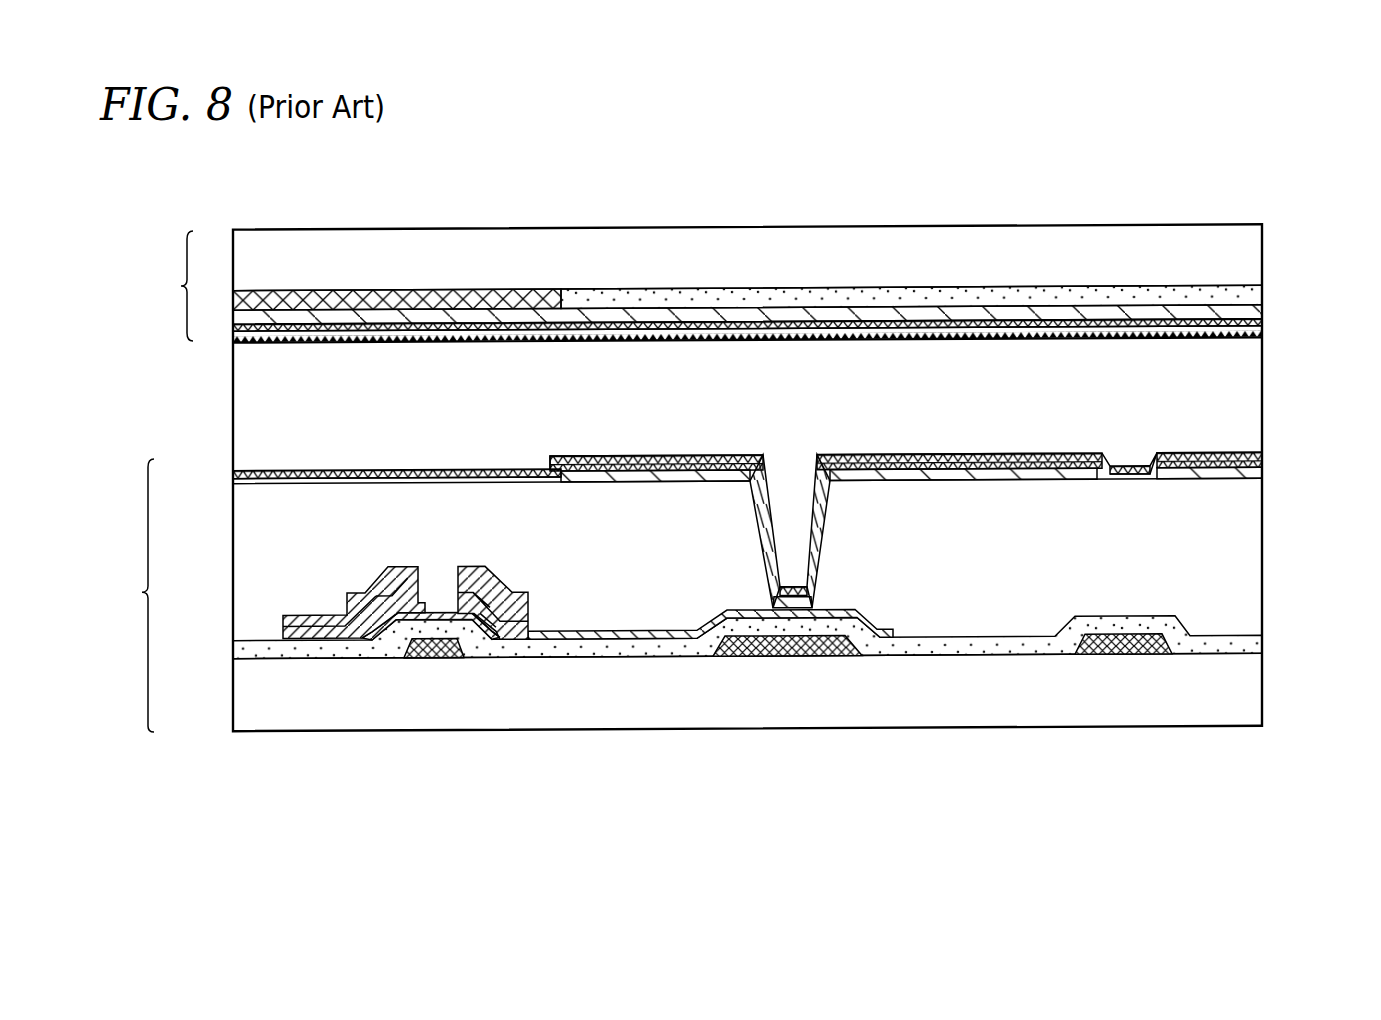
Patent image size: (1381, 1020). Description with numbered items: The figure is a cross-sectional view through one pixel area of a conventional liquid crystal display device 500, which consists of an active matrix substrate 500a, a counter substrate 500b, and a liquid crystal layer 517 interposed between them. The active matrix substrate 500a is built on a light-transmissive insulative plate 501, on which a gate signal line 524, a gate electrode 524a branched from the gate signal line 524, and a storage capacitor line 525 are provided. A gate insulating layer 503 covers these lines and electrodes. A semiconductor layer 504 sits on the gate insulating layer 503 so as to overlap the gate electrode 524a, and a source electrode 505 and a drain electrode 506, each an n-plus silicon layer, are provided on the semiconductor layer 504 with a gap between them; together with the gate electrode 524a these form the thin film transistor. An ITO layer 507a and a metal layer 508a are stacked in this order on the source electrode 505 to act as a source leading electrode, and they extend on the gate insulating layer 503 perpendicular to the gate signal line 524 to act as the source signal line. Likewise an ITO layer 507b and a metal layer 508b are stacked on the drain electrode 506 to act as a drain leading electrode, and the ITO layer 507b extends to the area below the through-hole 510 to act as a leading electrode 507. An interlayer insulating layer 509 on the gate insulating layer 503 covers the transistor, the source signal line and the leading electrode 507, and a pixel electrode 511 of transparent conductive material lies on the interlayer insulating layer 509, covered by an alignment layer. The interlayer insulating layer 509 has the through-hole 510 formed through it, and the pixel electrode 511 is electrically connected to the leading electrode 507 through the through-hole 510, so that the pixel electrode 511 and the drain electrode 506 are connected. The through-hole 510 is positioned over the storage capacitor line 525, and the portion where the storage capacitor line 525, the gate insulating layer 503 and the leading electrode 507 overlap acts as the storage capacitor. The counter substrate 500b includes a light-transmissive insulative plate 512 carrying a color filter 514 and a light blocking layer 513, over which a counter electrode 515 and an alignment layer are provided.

The liquid crystal display device 500 is at (1367, 182).
The active matrix substrate 500a is at (114, 595).
The counter substrate 500b is at (153, 286).
The light-transmissive insulative plate 501 is at (1043, 710).
The gate insulating layer 503 is at (653, 648).
The semiconductor layer 504 is at (406, 654).
The source electrode 505 is at (375, 640).
The drain electrode 506 is at (490, 638).
The leading electrode 507 is at (593, 639).
The ITO layer 507a is at (348, 635).
The ITO layer 507b is at (512, 633).
The metal layer 508a is at (302, 634).
The metal layer 508b is at (495, 580).
The interlayer insulating layer 509 is at (1240, 569).
The through-hole 510 is at (753, 558).
The pixel electrode 511 is at (955, 482).
The light-transmissive insulative plate 512 is at (568, 252).
The light blocking layer 513 is at (386, 288).
The color filter 514 is at (737, 288).
The counter electrode 515 is at (942, 307).
The liquid crystal layer 517 is at (255, 446).
The gate signal line 524 is at (1132, 658).
The gate electrode 524a is at (444, 654).
The storage capacitor line 525 is at (798, 658).